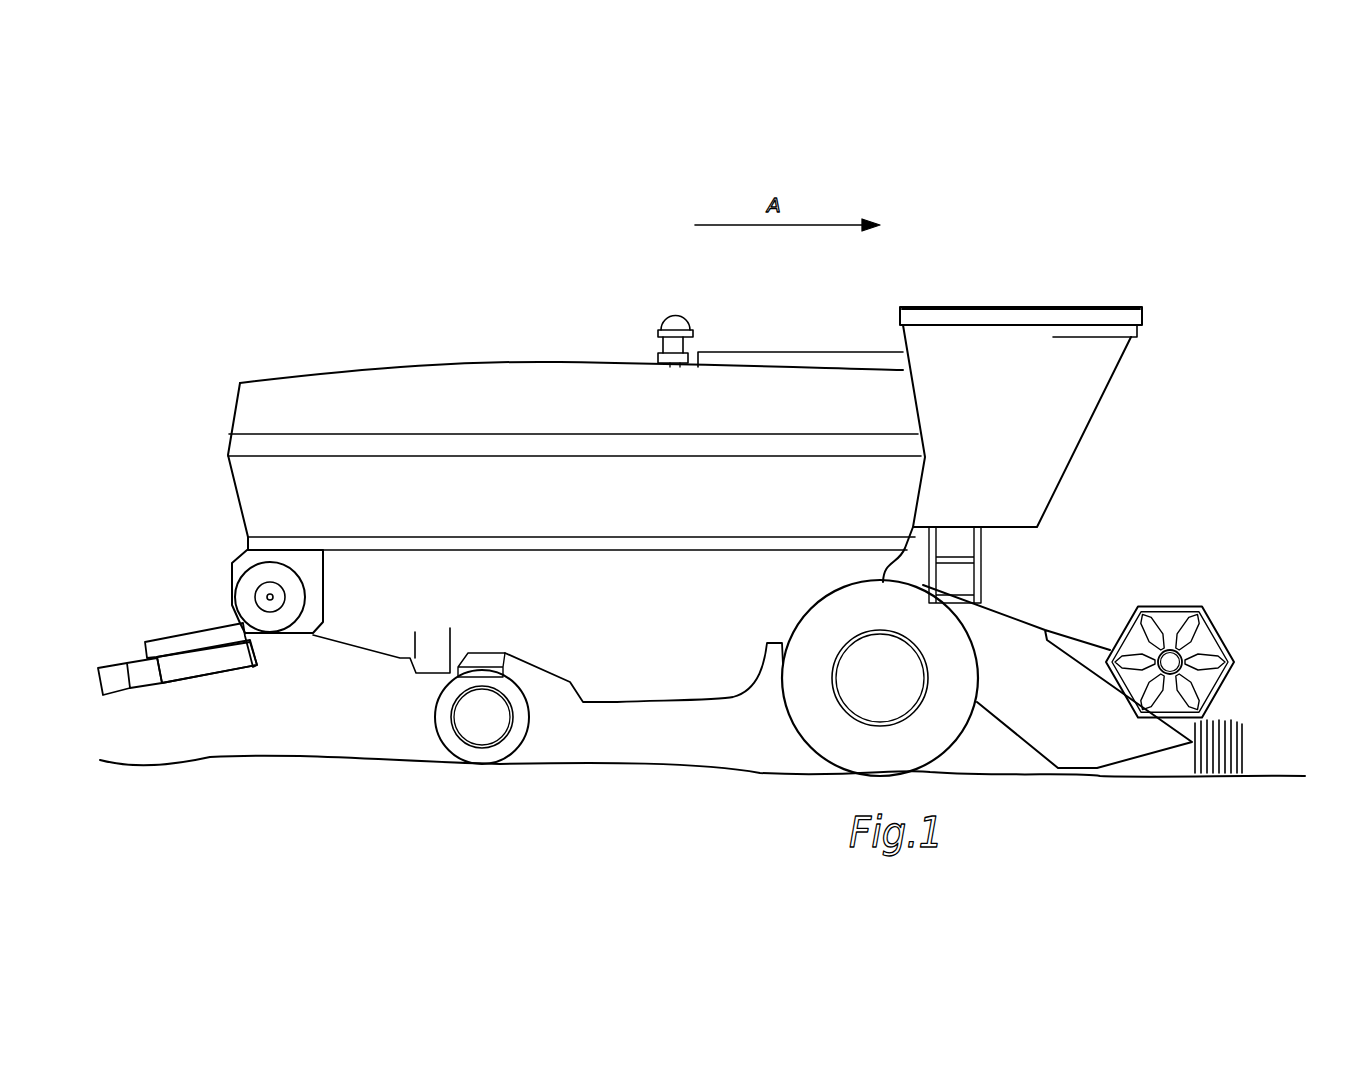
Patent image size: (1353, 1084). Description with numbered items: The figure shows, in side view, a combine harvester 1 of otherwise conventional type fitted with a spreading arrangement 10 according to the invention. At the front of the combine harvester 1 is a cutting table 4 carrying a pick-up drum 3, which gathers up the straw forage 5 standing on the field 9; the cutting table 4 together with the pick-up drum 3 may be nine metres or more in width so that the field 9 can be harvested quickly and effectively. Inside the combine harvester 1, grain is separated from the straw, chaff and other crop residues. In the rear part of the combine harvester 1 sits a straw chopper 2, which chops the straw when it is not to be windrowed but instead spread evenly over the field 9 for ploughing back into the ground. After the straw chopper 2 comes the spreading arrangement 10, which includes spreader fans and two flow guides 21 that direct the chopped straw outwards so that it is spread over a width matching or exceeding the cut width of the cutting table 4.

The combine harvester 1 is at (584, 296).
The straw chopper 2 is at (308, 573).
The pick-up drum 3 is at (1161, 605).
The cutting table 4 is at (993, 643).
The straw forage 5 is at (1235, 753).
The field 9 is at (120, 764).
The spreading arrangement 10 is at (176, 612).
The flow guide 21 is at (148, 673).